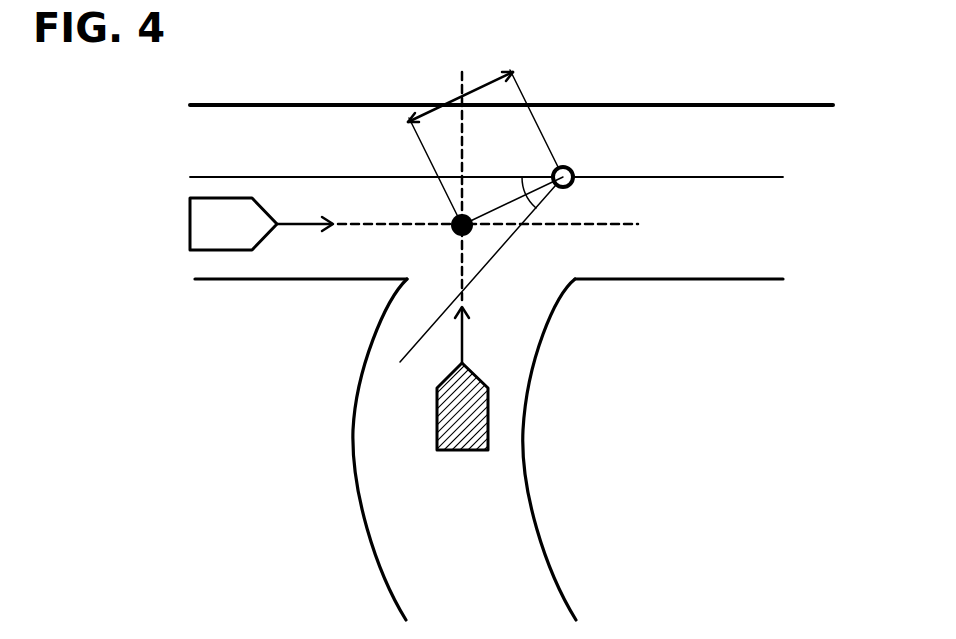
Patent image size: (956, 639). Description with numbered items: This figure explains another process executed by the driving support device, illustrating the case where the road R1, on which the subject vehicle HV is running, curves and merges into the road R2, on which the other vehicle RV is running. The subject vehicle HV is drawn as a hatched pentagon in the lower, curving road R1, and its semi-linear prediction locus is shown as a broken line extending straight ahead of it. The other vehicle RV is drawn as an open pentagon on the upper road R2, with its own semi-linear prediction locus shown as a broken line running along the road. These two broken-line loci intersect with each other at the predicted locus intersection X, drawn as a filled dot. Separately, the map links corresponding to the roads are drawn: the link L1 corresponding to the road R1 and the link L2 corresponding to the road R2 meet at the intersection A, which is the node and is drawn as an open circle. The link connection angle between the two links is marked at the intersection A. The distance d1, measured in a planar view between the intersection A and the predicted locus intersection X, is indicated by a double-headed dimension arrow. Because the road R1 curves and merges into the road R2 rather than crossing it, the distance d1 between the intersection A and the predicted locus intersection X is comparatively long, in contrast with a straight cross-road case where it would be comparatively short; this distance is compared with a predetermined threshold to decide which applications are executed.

The road R2 is at (232, 104).
The link L2 is at (317, 176).
The road R1 is at (532, 380).
The link L1 is at (480, 270).
The other vehicle RV is at (190, 222).
The subject vehicle HV is at (473, 430).
The distance d1 is at (485, 147).
The intersection A is at (575, 159).
The predicted locus intersection X is at (507, 219).